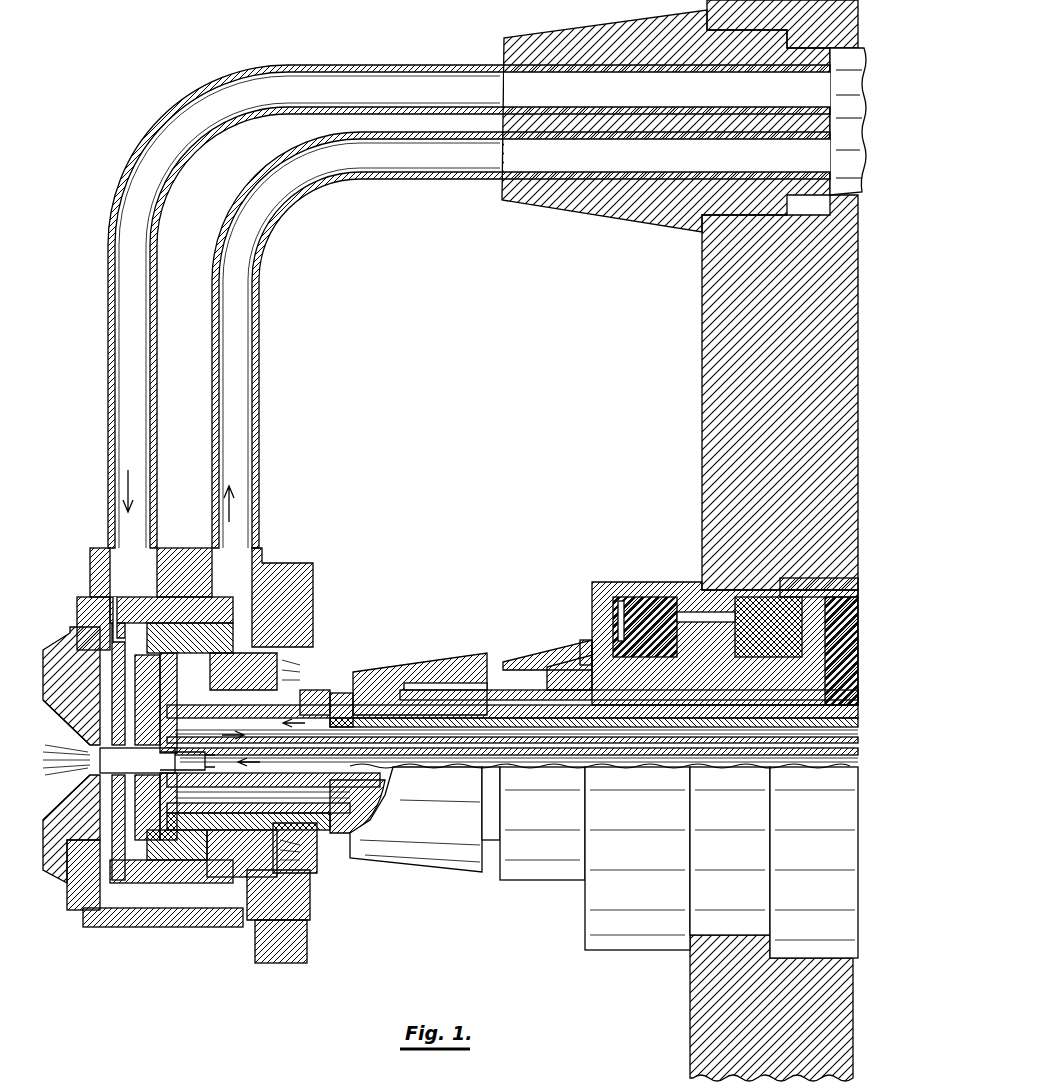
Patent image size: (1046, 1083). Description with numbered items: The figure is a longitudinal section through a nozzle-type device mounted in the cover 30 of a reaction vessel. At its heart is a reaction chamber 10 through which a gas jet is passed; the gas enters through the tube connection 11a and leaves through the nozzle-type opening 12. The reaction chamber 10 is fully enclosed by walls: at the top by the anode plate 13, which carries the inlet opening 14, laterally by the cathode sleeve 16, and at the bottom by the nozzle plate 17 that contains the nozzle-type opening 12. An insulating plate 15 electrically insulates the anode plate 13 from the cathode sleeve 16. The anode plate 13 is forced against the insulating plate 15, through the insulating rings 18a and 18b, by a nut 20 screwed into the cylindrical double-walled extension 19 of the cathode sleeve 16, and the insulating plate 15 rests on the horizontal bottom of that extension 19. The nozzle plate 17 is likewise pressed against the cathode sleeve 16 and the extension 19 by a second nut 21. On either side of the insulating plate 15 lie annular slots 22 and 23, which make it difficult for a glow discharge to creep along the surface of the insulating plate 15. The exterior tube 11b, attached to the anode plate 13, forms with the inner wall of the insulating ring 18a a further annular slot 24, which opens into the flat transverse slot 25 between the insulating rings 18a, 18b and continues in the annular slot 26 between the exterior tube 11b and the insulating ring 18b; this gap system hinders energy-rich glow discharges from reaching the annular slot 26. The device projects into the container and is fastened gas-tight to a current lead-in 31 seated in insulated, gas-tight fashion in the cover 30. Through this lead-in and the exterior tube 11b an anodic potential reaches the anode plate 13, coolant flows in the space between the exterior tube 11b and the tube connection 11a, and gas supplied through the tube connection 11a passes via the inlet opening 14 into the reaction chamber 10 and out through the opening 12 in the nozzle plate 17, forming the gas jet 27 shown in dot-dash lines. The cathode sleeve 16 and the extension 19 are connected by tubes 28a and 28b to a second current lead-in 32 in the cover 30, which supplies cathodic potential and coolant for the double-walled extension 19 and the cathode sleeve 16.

The reaction chamber 10 is at (86, 800).
The tube connection 11a is at (392, 770).
The exterior tube 11b is at (335, 690).
The nozzle-type opening 12 is at (84, 738).
The anode plate 13 is at (190, 688).
The inlet opening 14 is at (171, 760).
The insulating plate 15 is at (177, 816).
The cathode sleeve 16 is at (137, 760).
The nozzle plate 17 is at (98, 705).
The insulating ring 18a is at (193, 856).
The insulating ring 18b is at (312, 876).
The double-walled extension 19 is at (152, 920).
The nut 20 is at (258, 960).
The nut 21 is at (58, 645).
The annular slot 22 is at (512, 710).
The annular slot 23 is at (128, 675).
The annular slot 24 is at (295, 848).
The flat transverse slot 25 is at (235, 619).
The annular slot 26 is at (273, 801).
The gas jet 27 is at (70, 760).
The tube 28a is at (214, 334).
The tube 28b is at (108, 302).
The cover 30 is at (708, 372).
The current lead-in 31 is at (505, 880).
The current lead-in 32 is at (546, 200).